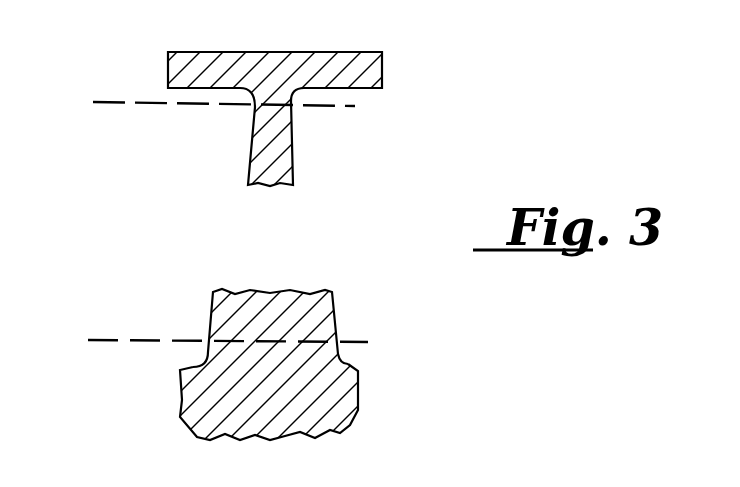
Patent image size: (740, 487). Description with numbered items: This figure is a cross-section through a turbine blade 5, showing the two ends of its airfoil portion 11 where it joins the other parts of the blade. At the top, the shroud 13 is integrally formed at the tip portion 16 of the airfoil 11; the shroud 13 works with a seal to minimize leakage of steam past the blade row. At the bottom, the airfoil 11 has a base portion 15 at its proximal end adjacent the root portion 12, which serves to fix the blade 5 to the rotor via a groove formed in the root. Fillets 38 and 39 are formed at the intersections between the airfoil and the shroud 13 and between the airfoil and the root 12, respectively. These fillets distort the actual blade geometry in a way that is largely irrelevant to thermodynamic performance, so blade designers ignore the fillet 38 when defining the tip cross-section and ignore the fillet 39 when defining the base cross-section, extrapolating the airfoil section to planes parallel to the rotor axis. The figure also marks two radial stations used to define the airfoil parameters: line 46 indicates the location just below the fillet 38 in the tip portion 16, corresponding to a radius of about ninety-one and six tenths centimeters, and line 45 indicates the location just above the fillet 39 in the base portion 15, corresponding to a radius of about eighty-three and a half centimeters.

The blade 5 is at (286, 117).
The shroud 13 is at (405, 68).
The tip portion 16 is at (249, 104).
The fillet 38 is at (297, 94).
The airfoil portion 11 is at (291, 174).
The line 46 is at (118, 104).
The root portion 12 is at (267, 363).
The base portion 15 is at (205, 353).
The fillet 39 is at (343, 363).
The line 45 is at (97, 340).